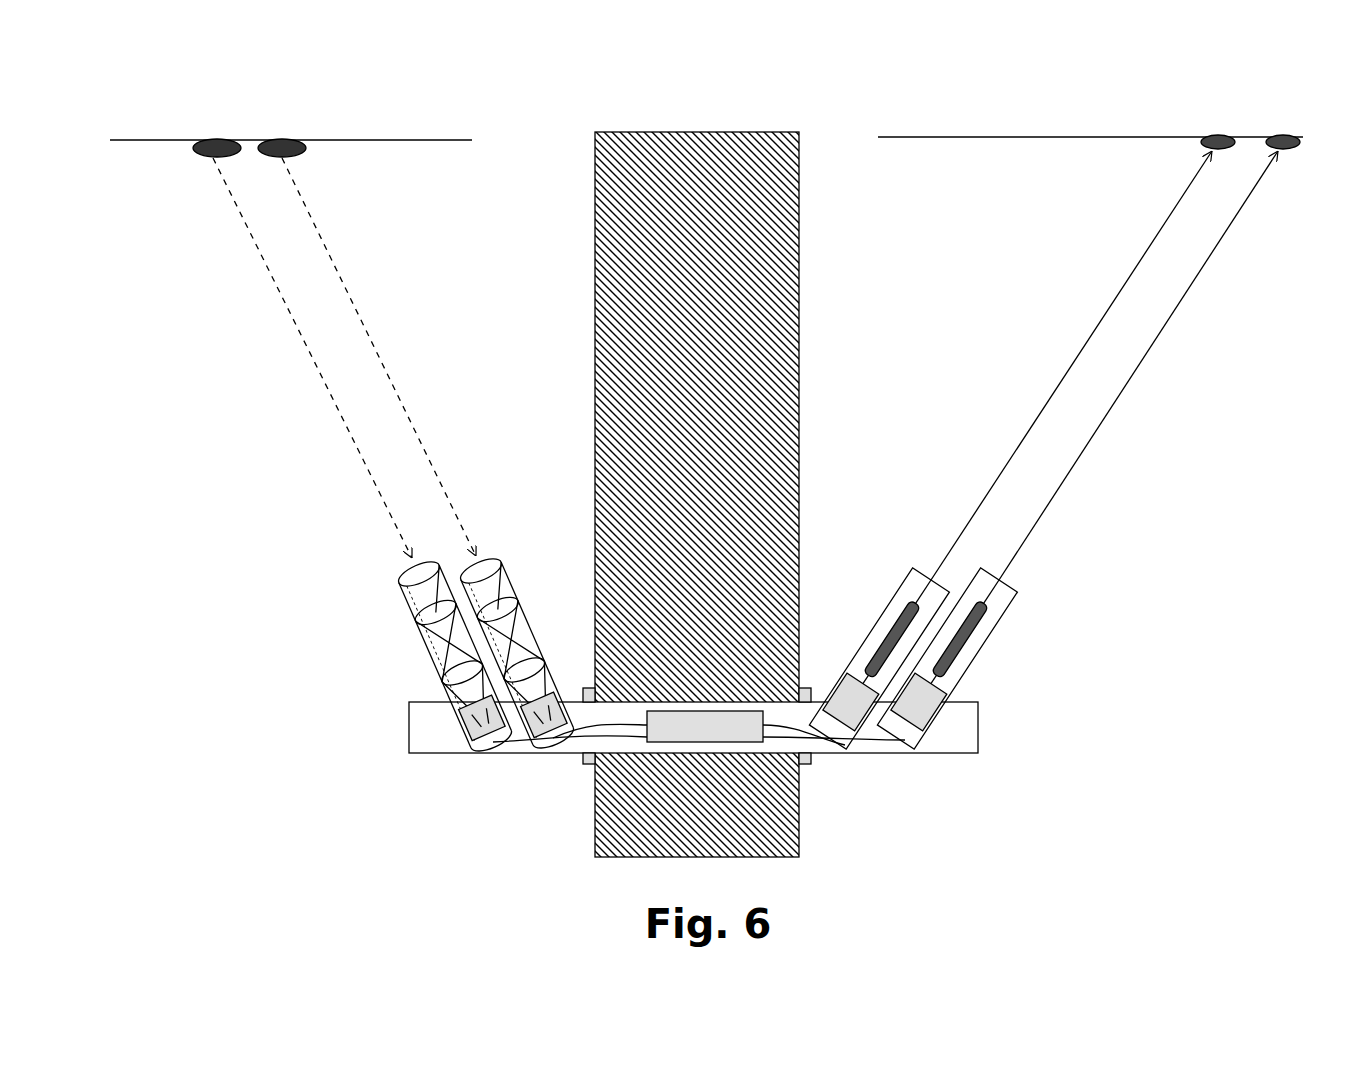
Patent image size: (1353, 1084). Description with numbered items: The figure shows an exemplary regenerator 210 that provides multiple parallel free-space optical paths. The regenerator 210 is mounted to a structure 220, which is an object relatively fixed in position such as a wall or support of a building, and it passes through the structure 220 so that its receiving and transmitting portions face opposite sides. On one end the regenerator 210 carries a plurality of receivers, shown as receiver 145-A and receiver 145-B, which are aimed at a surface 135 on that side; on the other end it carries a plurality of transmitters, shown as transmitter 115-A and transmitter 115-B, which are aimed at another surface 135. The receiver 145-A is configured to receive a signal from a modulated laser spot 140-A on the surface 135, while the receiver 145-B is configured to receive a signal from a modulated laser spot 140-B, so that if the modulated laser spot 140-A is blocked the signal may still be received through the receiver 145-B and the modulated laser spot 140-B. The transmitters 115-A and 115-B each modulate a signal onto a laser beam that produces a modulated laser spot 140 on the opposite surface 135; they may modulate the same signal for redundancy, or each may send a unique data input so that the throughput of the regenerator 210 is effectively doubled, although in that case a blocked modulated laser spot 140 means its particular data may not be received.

The surface 135 is at (403, 138).
The modulated laser spot 140-A is at (193, 162).
The modulated laser spot 140-B is at (310, 158).
The modulated laser spot 140 is at (1192, 148).
The structure 220 is at (723, 132).
The regenerator 210 is at (393, 717).
The receiver 145-A is at (467, 763).
The receiver 145-B is at (542, 763).
The transmitter 115-A is at (850, 763).
The transmitter 115-B is at (928, 763).